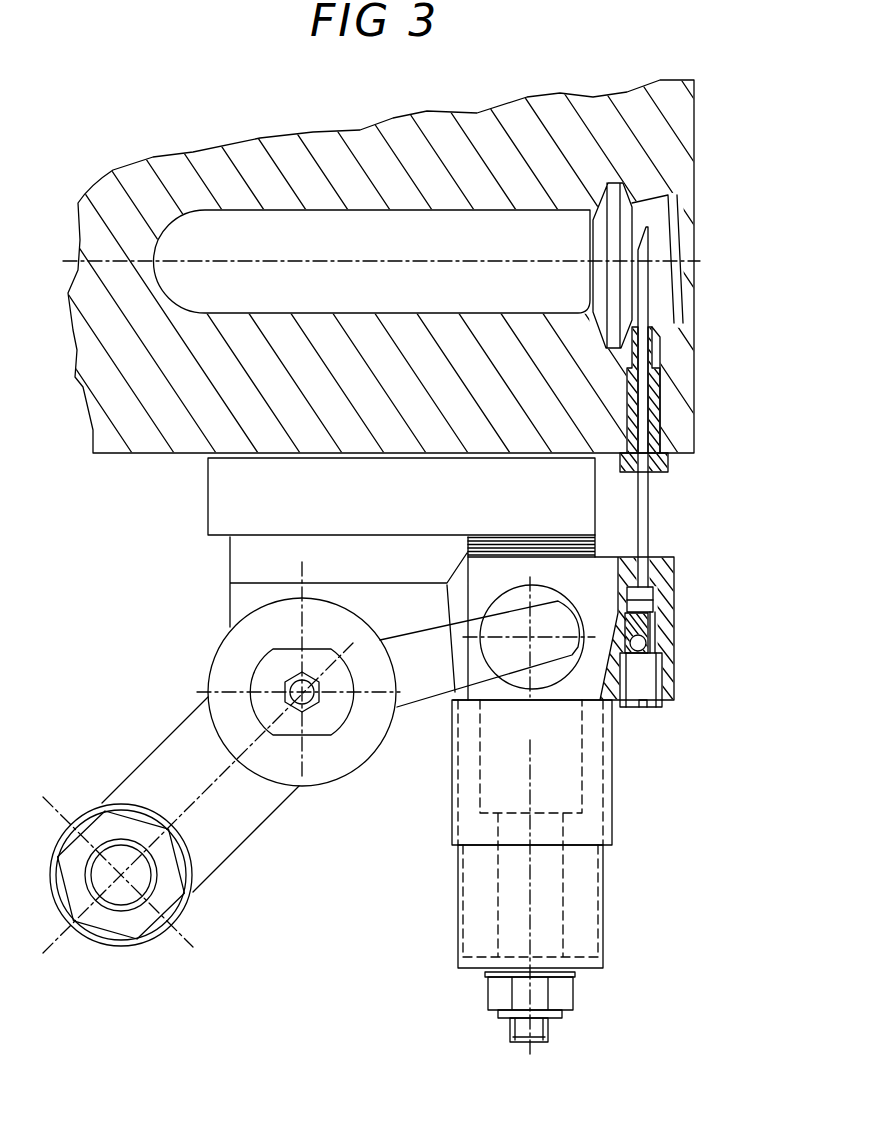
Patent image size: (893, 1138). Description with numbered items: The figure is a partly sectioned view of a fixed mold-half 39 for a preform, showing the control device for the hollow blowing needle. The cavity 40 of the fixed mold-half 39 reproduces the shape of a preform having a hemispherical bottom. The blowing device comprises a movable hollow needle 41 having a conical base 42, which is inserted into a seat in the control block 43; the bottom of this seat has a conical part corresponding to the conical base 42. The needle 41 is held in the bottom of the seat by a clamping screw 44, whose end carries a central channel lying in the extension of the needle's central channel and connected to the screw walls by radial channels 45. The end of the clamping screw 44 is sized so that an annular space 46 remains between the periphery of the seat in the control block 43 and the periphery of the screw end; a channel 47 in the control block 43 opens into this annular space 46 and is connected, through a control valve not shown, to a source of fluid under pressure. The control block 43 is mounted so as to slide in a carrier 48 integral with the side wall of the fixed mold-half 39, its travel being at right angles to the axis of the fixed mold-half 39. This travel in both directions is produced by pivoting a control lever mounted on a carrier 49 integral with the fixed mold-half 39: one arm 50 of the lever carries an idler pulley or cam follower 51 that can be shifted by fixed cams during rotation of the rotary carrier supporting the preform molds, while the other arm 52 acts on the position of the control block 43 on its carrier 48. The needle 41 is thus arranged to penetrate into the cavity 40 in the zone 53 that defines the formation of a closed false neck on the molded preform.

The fixed mold-half 39 is at (185, 180).
The cavity 40 is at (187, 253).
The zone 53 is at (625, 230).
The movable hollow needle 41 is at (636, 353).
The control block 43 is at (672, 560).
The conical base 42 is at (653, 590).
The radial channels 45 is at (658, 610).
The clamping screw 44 is at (642, 632).
The annular space 46 is at (646, 647).
The channel 47 is at (627, 633).
The carrier 49 is at (243, 603).
The arm 50 is at (217, 818).
The idler pulley or cam follower 51 is at (160, 905).
The arm 52 is at (515, 652).
The carrier 48 is at (575, 902).